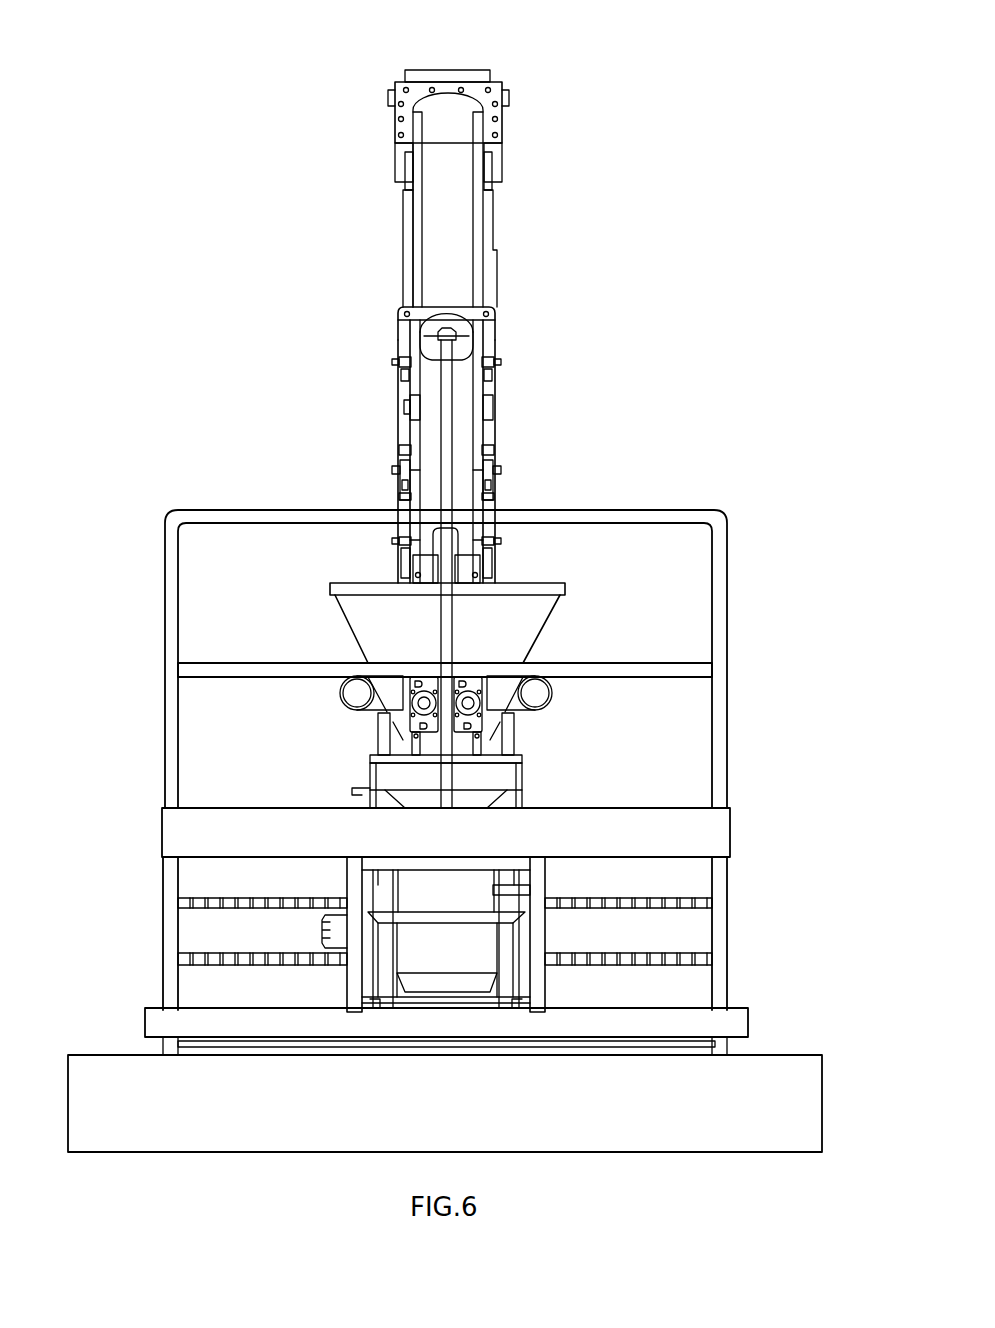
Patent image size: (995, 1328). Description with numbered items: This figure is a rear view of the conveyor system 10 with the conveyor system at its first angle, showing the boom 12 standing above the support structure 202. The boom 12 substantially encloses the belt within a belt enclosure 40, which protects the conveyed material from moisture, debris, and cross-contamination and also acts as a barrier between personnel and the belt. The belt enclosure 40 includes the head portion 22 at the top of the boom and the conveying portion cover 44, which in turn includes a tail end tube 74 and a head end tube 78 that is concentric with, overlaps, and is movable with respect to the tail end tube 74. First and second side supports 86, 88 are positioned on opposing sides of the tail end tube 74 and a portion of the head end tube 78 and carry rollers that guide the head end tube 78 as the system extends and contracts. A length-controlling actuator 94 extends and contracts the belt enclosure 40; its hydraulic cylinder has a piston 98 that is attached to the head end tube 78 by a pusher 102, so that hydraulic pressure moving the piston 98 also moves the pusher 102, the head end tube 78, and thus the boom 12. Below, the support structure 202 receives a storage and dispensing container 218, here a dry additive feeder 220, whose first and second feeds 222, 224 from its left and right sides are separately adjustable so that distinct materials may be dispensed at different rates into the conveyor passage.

The conveyor system 10 is at (678, 316).
The boom 12 is at (497, 278).
The head portion 22 is at (502, 85).
The belt enclosure 40 is at (400, 365).
The conveying portion cover 44 is at (467, 428).
The tail end tube 74 is at (458, 395).
The head end tube 78 is at (460, 215).
The first side support 86 is at (400, 468).
The second side support 88 is at (497, 470).
The length-controlling actuator 94 is at (447, 408).
The piston 98 is at (447, 372).
The pusher 102 is at (497, 325).
The support structure 202 is at (145, 712).
The storage and dispensing container 218 is at (521, 612).
The dry additive feeder 220 is at (362, 683).
The first feed 222 is at (355, 695).
The second feed 224 is at (537, 697).